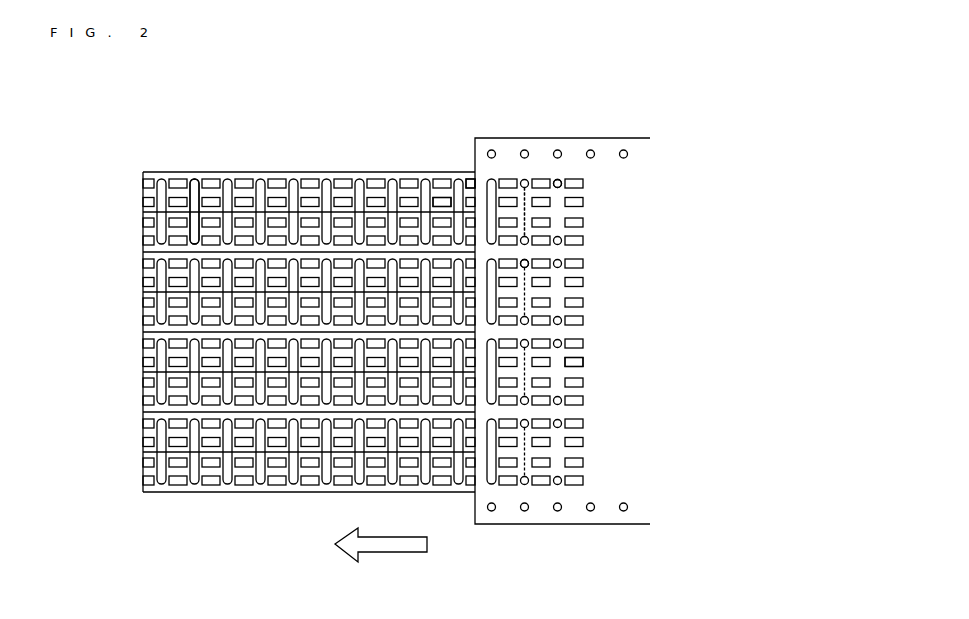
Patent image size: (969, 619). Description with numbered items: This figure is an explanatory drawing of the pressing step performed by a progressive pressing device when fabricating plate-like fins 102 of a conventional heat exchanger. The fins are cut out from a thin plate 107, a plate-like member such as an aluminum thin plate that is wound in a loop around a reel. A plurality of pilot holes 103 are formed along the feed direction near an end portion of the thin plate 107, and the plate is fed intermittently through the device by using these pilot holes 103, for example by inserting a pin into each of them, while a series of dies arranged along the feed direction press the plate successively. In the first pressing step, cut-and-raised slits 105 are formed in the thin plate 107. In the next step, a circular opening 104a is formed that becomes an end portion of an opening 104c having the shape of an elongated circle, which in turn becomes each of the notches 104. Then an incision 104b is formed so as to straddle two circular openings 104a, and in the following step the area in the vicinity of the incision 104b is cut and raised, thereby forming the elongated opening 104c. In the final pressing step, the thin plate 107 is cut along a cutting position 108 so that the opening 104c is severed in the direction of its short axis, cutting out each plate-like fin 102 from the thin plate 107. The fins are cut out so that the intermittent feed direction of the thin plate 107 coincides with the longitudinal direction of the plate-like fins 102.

The plate-like fin 102 is at (143, 185).
The pilot hole 103 is at (624, 152).
The notch 104 is at (188, 186).
The circular opening 104a is at (560, 186).
The incision 104b is at (526, 207).
The opening 104c is at (530, 264).
The cut-and-raised slit 105 is at (573, 361).
The thin plate 107 is at (620, 452).
The cutting position 108 is at (476, 170).